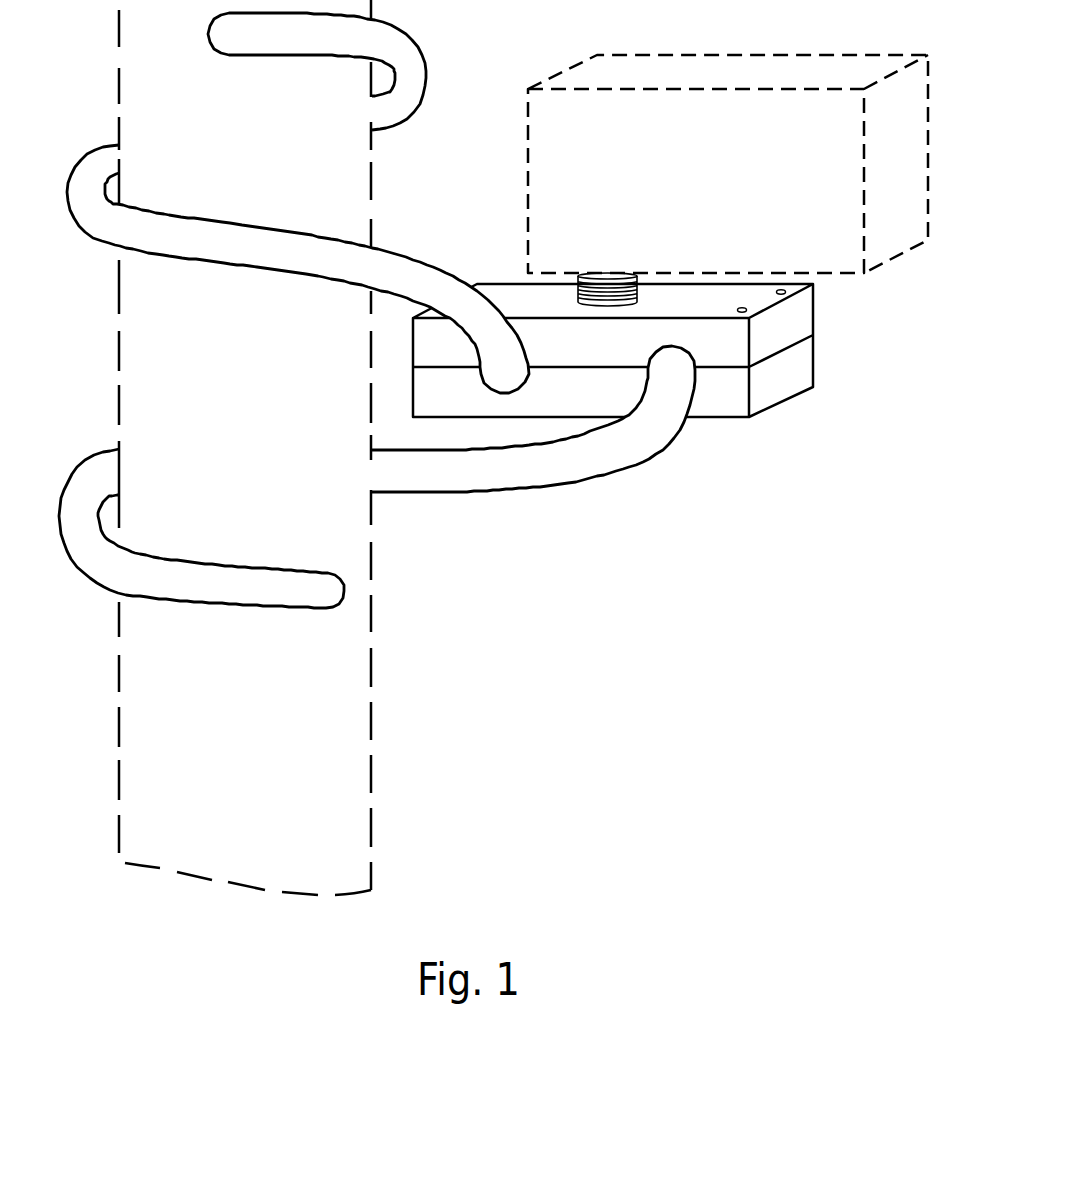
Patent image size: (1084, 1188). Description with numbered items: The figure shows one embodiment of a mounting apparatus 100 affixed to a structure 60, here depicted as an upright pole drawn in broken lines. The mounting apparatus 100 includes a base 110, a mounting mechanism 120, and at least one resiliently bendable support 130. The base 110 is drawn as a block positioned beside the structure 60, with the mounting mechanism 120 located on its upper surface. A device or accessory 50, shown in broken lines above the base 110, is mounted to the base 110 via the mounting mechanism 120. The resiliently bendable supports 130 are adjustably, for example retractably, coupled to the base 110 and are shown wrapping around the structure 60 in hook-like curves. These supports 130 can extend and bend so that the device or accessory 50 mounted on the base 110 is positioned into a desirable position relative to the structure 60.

The device or accessory 50 is at (708, 192).
The structure 60 is at (257, 439).
The mounting apparatus 100 is at (841, 521).
The base 110 is at (713, 412).
The mounting mechanism 120 is at (578, 294).
The resiliently bendable support 130 is at (402, 53).